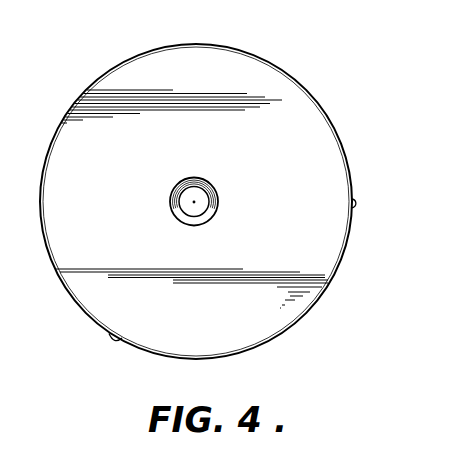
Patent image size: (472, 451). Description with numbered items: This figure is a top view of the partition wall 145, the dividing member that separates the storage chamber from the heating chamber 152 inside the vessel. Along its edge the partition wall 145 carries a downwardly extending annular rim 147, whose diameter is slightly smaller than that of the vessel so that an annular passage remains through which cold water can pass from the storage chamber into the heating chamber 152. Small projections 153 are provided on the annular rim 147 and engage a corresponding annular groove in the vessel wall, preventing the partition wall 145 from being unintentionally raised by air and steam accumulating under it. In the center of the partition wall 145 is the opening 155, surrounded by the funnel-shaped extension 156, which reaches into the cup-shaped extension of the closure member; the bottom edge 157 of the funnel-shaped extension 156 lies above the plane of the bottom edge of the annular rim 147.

The heating chamber 152 is at (124, 61).
The annular rim 147 is at (336, 67).
The partition wall 145 is at (266, 323).
The small projections 153 is at (356, 204).
The bottom edge of the funnel-shaped extension 157 is at (175, 190).
The funnel-shaped extension 156 is at (192, 222).
The opening 155 is at (197, 197).